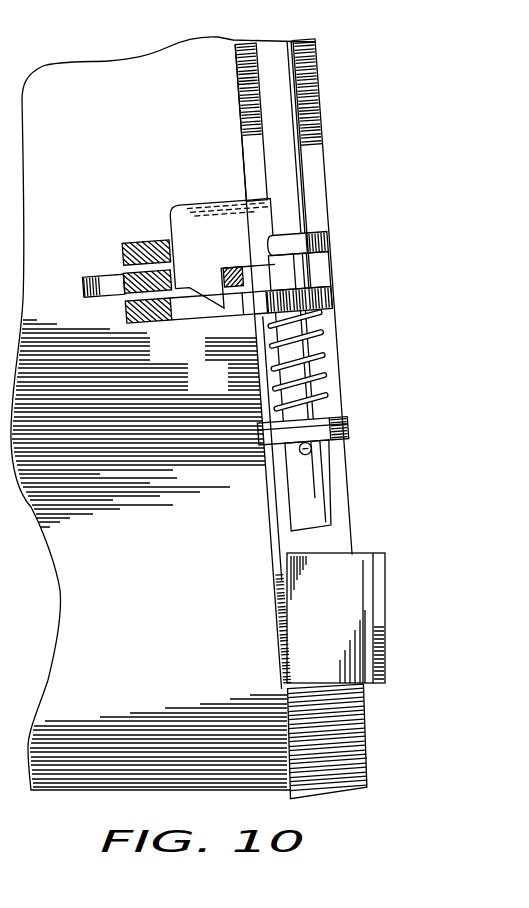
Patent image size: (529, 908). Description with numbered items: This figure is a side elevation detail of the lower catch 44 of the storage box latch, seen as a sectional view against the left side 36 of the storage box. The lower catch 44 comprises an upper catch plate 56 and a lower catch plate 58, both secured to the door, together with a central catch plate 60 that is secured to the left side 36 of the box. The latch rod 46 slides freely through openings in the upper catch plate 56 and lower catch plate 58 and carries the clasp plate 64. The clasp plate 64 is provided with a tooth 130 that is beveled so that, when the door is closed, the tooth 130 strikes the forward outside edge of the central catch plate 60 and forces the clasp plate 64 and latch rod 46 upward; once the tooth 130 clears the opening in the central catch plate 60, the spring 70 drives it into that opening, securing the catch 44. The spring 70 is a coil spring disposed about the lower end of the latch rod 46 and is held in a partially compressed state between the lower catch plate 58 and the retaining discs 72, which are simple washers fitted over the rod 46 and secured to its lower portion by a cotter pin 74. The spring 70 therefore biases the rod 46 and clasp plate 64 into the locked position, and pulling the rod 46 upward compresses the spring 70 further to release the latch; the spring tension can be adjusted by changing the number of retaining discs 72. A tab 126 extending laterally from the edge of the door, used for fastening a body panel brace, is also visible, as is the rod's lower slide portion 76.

The left side 36 is at (168, 628).
The lower catch 44 is at (352, 264).
The latch rod 46 is at (302, 167).
The upper catch plate 56 is at (145, 241).
The lower catch plate 58 is at (207, 320).
The central catch plate 60 is at (113, 277).
The lower clasp plate 64 is at (205, 198).
The spring 70 is at (317, 360).
The retaining discs 72 is at (350, 421).
The cotter pin 74 is at (312, 450).
The slide rod 76 is at (290, 508).
The tab 126 is at (386, 573).
The tooth 130 is at (185, 292).